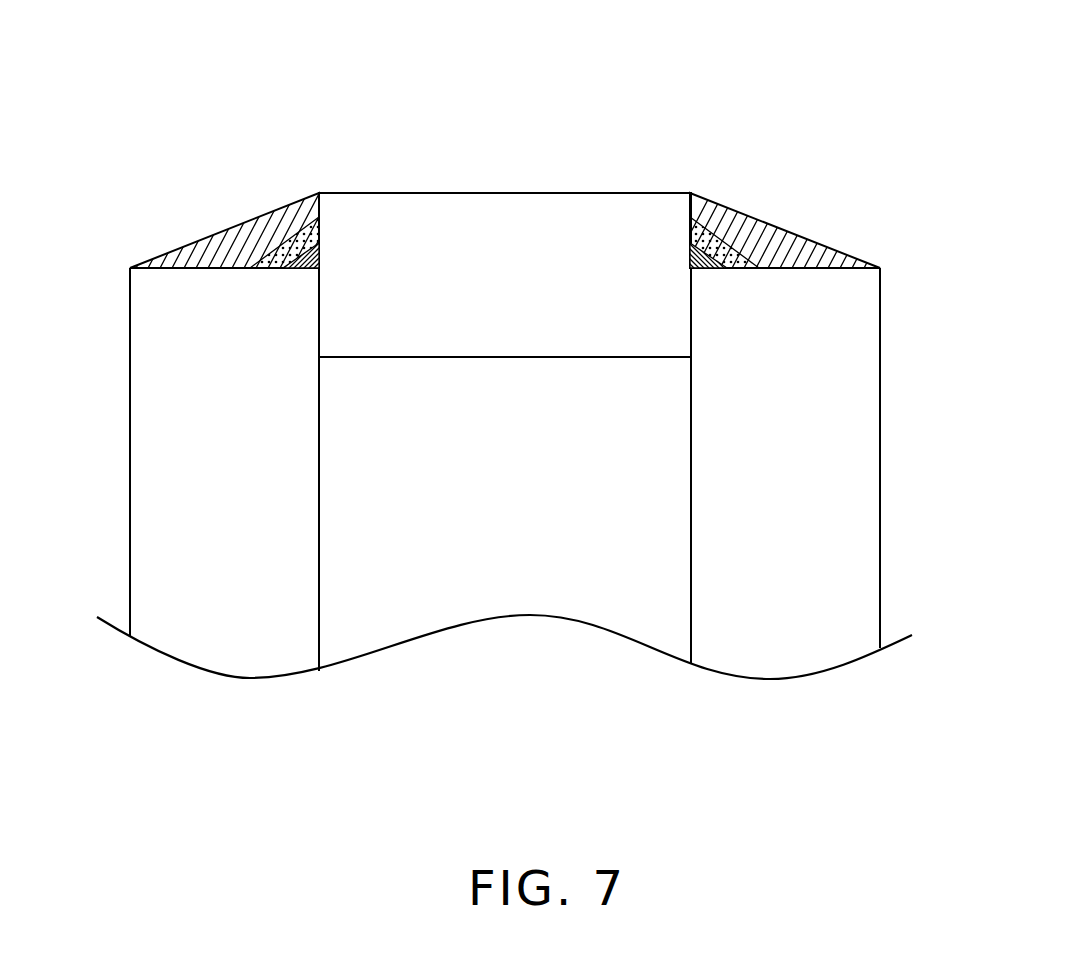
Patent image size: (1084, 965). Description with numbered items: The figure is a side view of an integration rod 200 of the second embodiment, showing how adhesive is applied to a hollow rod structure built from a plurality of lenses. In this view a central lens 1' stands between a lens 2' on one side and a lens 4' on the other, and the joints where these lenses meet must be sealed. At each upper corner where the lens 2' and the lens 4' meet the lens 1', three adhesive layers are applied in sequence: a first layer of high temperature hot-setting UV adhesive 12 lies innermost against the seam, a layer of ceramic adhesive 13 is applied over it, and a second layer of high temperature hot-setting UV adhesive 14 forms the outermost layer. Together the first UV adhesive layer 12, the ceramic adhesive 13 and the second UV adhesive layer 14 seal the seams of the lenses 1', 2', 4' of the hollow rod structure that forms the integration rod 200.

The integration rod 200 is at (888, 118).
The lens 1' is at (505, 391).
The lens 2' is at (193, 452).
The lens 4' is at (818, 458).
The first layer of high temperature hot-setting UV adhesive 12 is at (310, 233).
The layer of ceramic adhesive 13 is at (265, 235).
The second layer of high temperature hot-setting UV adhesive 14 is at (202, 248).